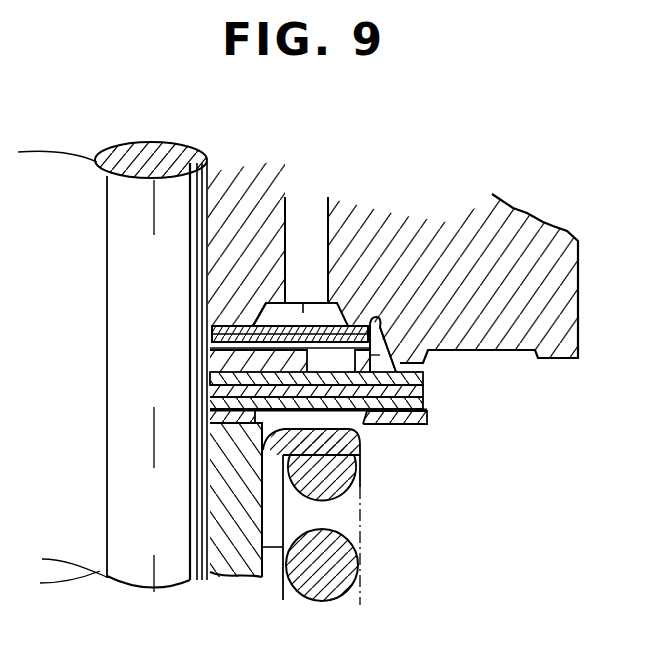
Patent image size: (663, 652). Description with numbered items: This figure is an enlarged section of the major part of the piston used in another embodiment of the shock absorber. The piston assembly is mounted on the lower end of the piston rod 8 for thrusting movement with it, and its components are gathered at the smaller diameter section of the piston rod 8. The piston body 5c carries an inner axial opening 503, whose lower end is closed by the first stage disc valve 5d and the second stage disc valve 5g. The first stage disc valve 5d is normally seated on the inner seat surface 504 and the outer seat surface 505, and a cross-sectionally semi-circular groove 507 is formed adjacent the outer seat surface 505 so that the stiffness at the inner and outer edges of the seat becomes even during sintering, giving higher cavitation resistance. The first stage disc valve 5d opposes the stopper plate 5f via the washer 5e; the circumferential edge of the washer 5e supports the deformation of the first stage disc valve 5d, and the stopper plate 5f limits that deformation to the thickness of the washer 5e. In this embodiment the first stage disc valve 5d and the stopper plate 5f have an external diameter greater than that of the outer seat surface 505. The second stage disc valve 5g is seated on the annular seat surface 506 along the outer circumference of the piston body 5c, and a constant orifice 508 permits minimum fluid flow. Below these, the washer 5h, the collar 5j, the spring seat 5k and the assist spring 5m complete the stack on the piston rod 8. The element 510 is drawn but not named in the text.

The piston rod 8 is at (98, 188).
The piston body 5c is at (523, 243).
The inner axial opening 503 is at (313, 228).
The bolt head 510 is at (303, 310).
The first stage disc valve 5d is at (280, 319).
The inner seat surface 504 is at (224, 332).
The washer 5e is at (250, 348).
The semi-circular groove 507 is at (386, 318).
The outer seat surface 505 is at (388, 352).
The stopper plate 5f is at (378, 360).
The constant orifice 508 is at (424, 371).
The annular seat surface 506 is at (424, 393).
The second stage disc valve 5g is at (428, 410).
The collar 5j is at (222, 509).
The washer 5h is at (254, 417).
The spring seat 5k is at (340, 474).
The assist spring 5m is at (342, 576).